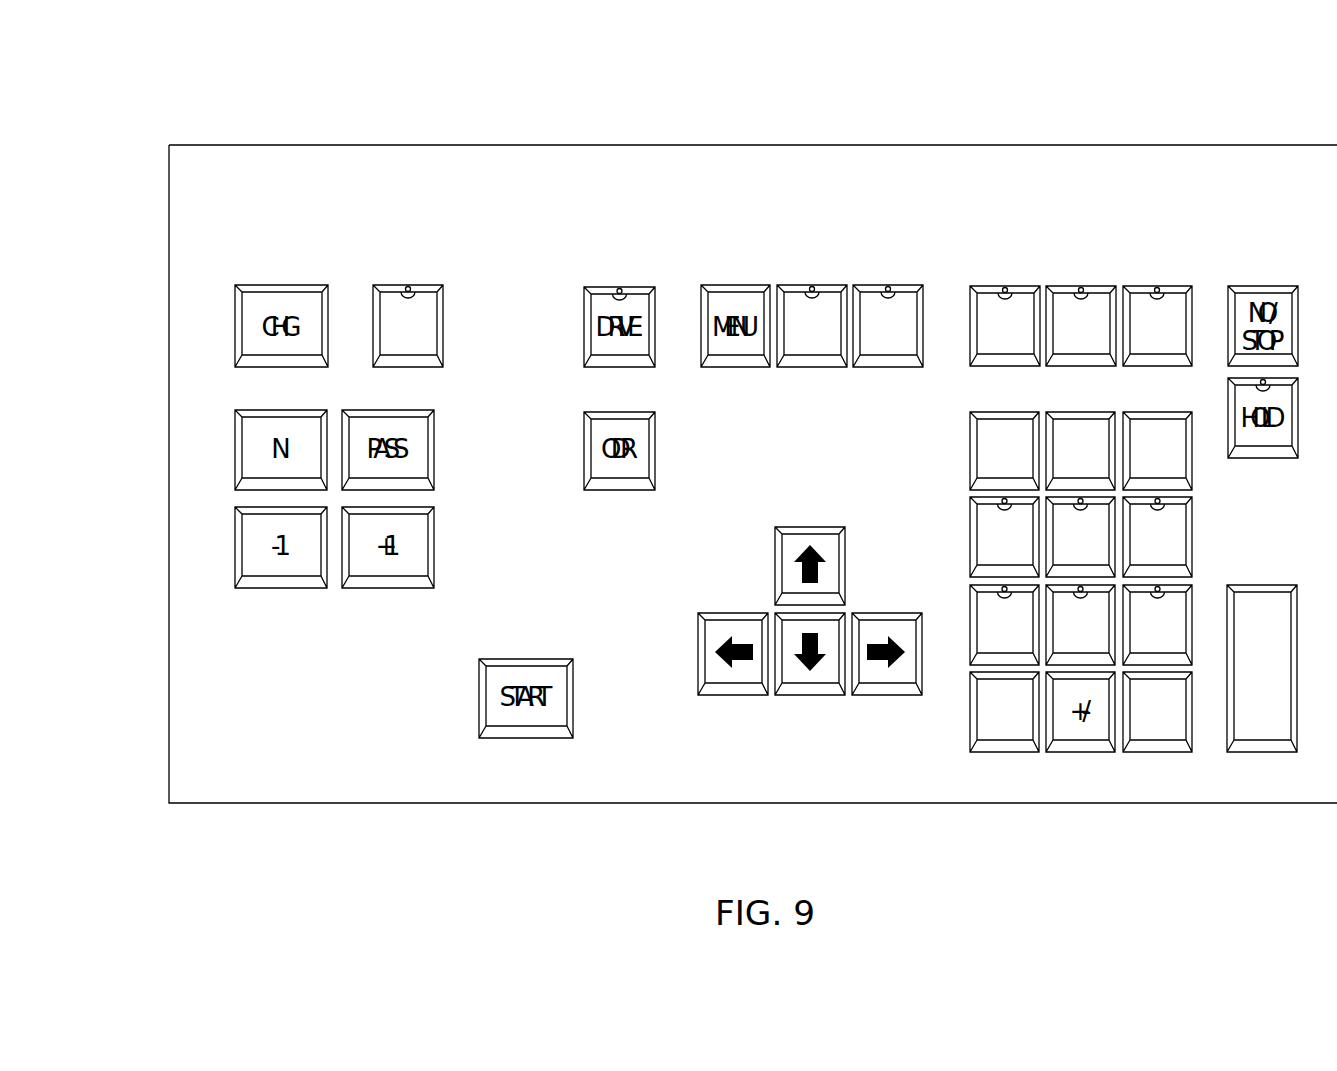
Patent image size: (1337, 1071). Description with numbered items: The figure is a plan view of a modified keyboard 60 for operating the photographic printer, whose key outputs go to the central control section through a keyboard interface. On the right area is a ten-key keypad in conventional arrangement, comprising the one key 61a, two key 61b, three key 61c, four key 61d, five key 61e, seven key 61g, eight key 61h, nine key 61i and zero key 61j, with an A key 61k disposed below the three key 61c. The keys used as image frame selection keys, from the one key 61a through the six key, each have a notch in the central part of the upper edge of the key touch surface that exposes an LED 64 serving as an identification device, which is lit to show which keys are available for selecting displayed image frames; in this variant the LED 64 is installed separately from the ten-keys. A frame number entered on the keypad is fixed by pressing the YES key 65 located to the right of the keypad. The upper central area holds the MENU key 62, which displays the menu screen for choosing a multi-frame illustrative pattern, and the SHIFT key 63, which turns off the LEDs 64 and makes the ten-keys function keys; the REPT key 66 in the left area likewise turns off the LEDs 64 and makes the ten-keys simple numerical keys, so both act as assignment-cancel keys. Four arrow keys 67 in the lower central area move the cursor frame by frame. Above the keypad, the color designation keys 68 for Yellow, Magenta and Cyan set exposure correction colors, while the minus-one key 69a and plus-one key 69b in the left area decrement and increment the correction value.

The keyboard 60 is at (1149, 133).
The "1" key 61a is at (970, 603).
The "2" key 61b is at (1090, 587).
The "3" key 61c is at (1192, 613).
The "4" key 61d is at (970, 543).
The "5" key 61e is at (1046, 497).
The "7" key 61g is at (970, 425).
The "8" key 61h is at (1100, 412).
The "9" key 61i is at (1130, 412).
The "0" key 61j is at (1010, 750).
The "A" key 61k is at (1138, 752).
The "MENU" key 62 is at (827, 287).
The "SHIFT" key 63 is at (873, 287).
The LED 64 is at (1078, 497).
The "YES" key 65 is at (1243, 752).
The "REPT" key 66 is at (450, 300).
The arrow keys 67 is at (812, 507).
The color designation keys 68 is at (1163, 287).
The "-1" key 69a is at (258, 580).
The "+1" key 69b is at (370, 580).